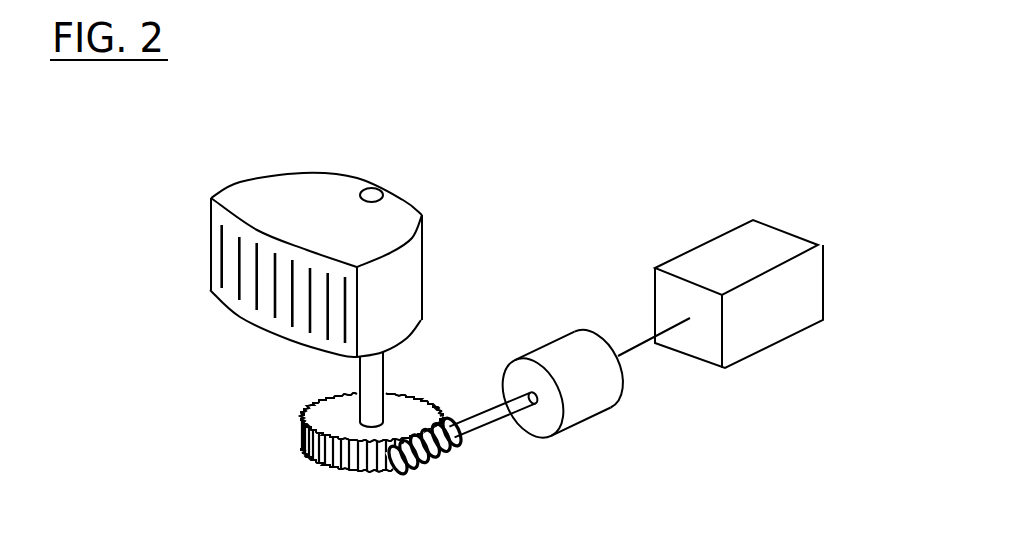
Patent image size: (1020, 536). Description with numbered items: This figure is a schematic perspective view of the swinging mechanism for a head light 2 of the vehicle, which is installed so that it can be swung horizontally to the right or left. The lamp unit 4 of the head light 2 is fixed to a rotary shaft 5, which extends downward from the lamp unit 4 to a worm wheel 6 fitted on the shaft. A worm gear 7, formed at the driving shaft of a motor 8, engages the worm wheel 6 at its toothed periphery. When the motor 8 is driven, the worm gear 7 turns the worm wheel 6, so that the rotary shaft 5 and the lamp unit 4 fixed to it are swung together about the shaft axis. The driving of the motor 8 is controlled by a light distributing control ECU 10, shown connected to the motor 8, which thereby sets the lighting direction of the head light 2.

The head light 2 is at (188, 271).
The lamp unit 4 is at (410, 290).
The rotary shaft 5 is at (367, 378).
The worm wheel 6 is at (307, 452).
The worm gear 7 is at (430, 460).
The motor 8 is at (592, 415).
The light distributing control ECU 10 is at (790, 232).